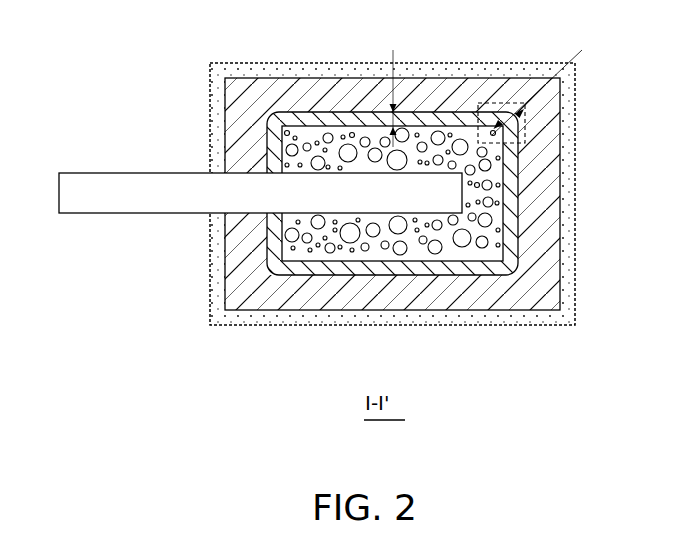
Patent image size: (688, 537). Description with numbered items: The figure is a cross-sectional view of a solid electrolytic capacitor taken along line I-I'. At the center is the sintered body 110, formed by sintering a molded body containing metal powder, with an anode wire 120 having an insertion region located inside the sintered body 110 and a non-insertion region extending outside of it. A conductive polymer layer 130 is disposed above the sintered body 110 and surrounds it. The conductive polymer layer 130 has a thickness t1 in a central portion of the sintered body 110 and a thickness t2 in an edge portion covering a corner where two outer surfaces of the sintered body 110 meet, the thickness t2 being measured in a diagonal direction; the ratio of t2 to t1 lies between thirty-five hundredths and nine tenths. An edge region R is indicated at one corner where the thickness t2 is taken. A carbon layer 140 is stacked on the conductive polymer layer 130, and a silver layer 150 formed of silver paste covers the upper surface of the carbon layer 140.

The sintered body 110 is at (319, 228).
The anode wire 120 is at (90, 205).
The conductive polymer layer 130 is at (318, 117).
The carbon layer 140 is at (270, 92).
The silver layer 150 is at (223, 68).
The region R is at (502, 103).
The thickness of the conductive polymer layer in a central portion t1 is at (383, 90).
The thickness of the conductive polymer layer in an edge portion t2 is at (537, 85).